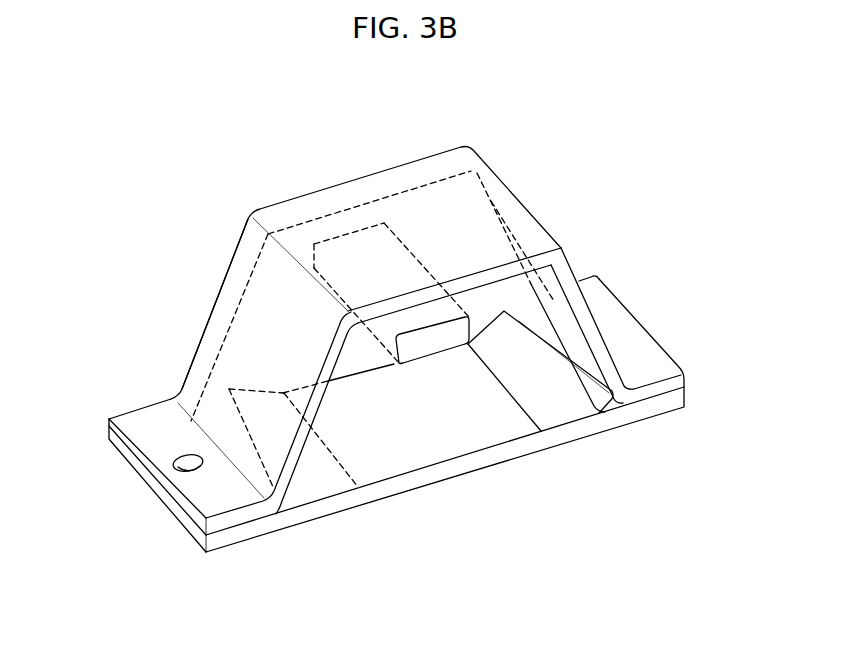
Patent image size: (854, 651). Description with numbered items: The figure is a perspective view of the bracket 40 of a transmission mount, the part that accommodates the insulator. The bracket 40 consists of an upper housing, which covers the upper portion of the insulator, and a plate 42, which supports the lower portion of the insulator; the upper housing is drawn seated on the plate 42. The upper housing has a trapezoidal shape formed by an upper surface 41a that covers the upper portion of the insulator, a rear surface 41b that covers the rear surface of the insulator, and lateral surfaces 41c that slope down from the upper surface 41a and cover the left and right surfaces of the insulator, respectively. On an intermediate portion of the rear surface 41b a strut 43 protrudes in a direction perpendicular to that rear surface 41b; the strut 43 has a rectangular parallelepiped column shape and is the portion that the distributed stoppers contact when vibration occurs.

The bracket 40 is at (238, 186).
The upper surface 41a is at (418, 174).
The rear surface 41b is at (486, 300).
The lateral surfaces 41c is at (260, 341).
The plate 42 is at (261, 522).
The strut 43 is at (430, 342).